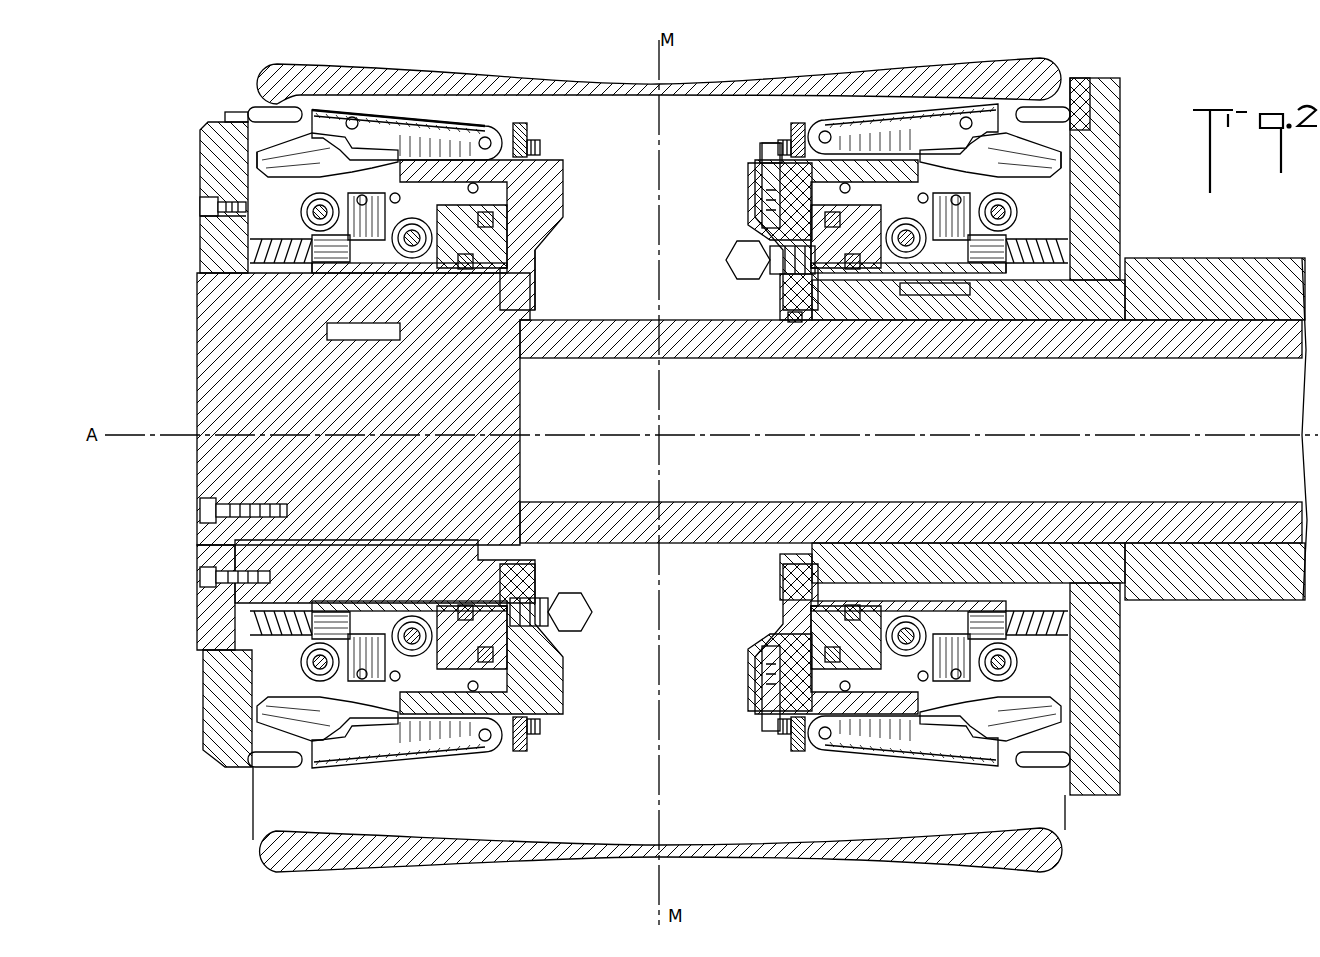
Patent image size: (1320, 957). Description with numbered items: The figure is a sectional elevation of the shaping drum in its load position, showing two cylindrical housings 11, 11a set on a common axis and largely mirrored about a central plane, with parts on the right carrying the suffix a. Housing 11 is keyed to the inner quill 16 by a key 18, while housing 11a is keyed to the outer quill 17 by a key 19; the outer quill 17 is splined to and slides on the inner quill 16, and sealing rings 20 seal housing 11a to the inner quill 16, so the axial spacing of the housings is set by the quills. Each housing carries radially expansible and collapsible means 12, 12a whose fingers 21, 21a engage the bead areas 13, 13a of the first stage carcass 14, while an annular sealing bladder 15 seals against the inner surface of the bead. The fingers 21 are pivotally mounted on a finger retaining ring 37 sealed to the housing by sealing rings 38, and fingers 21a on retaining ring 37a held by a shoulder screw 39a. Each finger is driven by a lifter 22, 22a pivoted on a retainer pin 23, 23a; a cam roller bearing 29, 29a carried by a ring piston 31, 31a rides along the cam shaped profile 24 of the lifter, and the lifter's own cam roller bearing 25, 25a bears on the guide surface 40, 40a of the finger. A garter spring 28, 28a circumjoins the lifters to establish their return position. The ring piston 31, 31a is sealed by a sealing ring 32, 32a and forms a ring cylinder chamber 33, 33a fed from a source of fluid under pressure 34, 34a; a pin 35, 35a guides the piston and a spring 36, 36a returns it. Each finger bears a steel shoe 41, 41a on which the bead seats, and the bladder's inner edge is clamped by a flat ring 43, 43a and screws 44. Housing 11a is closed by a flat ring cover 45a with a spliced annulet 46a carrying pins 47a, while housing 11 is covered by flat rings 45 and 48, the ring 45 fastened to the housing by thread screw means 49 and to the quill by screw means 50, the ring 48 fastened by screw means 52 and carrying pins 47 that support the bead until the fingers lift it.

The cylindrical housing 11 is at (240, 305).
The cylindrical housing 11a is at (1110, 215).
The radially expansible and collapsible means 12 is at (378, 421).
The radially expansible and collapsible means 12a is at (972, 422).
The bead area 13 is at (293, 77).
The bead area 13a is at (1035, 70).
The first stage carcass 14 is at (618, 83).
The annular sealing bladder 15 is at (405, 120).
The inner quill 16 is at (1170, 345).
The outer quill 17 is at (1240, 268).
The key 18 is at (365, 342).
The key 19 is at (945, 296).
The sealing rings 20 is at (790, 316).
The finger 21 is at (470, 130).
The finger 21a is at (895, 116).
The lifter 22 is at (348, 274).
The lifter 22a is at (1010, 276).
The retainer pin 23 is at (398, 192).
The retainer pin 23a is at (923, 192).
The cam shaped profile 24 is at (390, 242).
The cam roller bearing 25 is at (318, 232).
The cam roller bearing 25a is at (1008, 200).
The garter spring 28 is at (364, 195).
The garter spring 28a is at (956, 195).
The cam roller bearing 29 is at (412, 260).
The cam roller bearing 29a is at (890, 262).
The ring piston 31 is at (470, 424).
The ring piston 31a is at (862, 230).
The sealing ring 32 is at (477, 214).
The sealing ring 32a is at (905, 165).
The ring cylinder chamber 33 is at (536, 257).
The ring cylinder chamber 33a is at (785, 285).
The source of fluid under pressure 34 is at (575, 632).
The source of fluid under pressure 34a is at (730, 260).
The pin 35 is at (266, 270).
The pin 35a is at (1050, 272).
The spring 36 is at (258, 239).
The spring 36a is at (1040, 239).
The finger retaining ring 37 is at (565, 172).
The finger retaining ring 37a is at (748, 170).
The sealing rings 38 is at (479, 188).
The shoulder screw 39a is at (765, 145).
The guide surface 40 is at (343, 170).
The guide surface 40a is at (962, 170).
The steel shoe 41 is at (272, 152).
The steel shoe 41a is at (1062, 155).
The flat ring 43 is at (522, 125).
The flat ring 43a is at (800, 120).
The screws 44 is at (542, 148).
The flat ring 45 is at (352, 117).
The flat ring cover 45a is at (965, 115).
The annulet 46a is at (1085, 85).
The pins 47 is at (255, 110).
The pins 47a is at (1030, 112).
The flat ring 48 is at (200, 192).
The thread screw means 49 is at (205, 590).
The screw means 50 is at (205, 522).
The screw means 52 is at (200, 207).